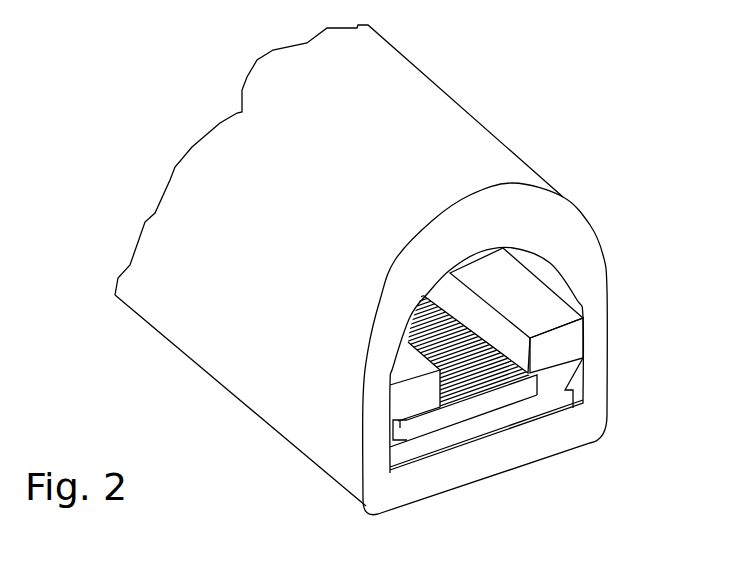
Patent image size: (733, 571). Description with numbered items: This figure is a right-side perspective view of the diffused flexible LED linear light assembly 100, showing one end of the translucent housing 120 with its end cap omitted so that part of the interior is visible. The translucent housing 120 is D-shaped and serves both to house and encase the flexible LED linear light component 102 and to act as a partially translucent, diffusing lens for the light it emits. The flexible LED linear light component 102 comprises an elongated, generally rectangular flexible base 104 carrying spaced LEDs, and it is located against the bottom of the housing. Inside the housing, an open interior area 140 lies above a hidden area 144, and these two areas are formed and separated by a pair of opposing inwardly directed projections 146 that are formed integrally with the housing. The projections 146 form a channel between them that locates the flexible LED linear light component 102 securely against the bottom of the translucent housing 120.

The diffused flexible LED linear light assembly 100 is at (471, 332).
The flexible LED linear light component 102 is at (491, 423).
The flexible base 104 is at (524, 404).
The translucent housing 120 is at (495, 132).
The open interior area 140 is at (553, 278).
The hidden area 144 is at (570, 375).
The inwardly directed projections 146 is at (560, 347).